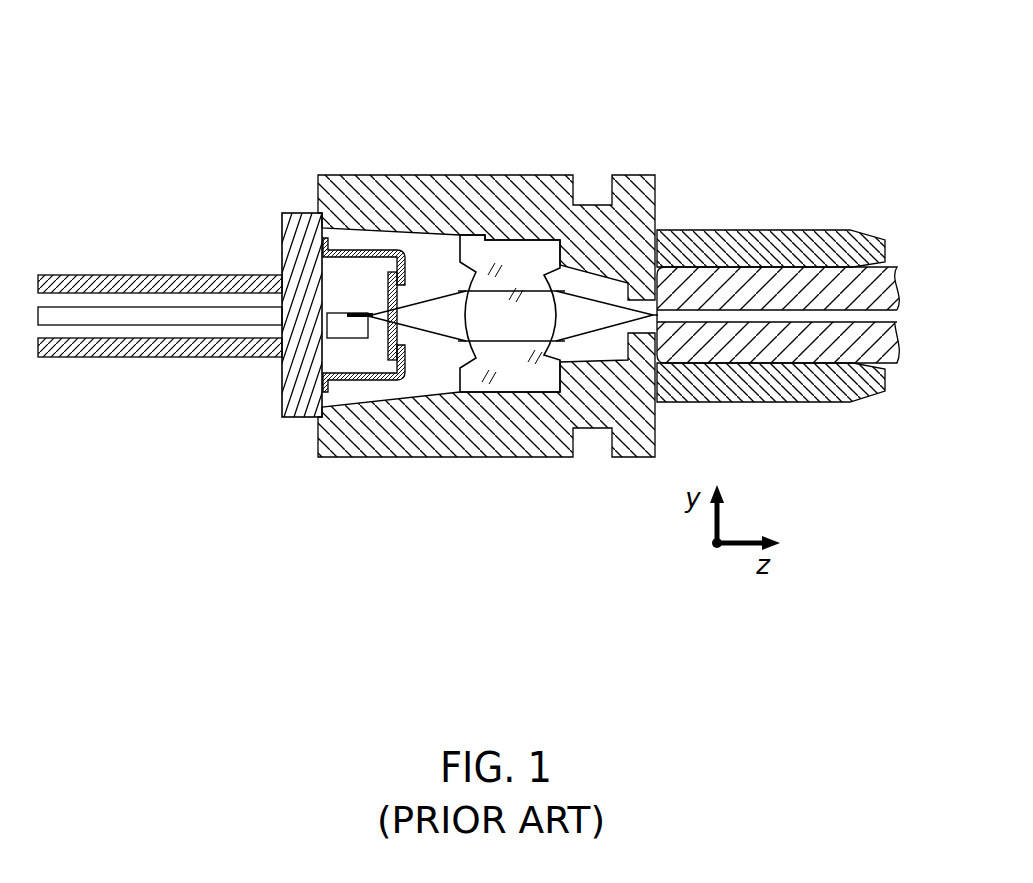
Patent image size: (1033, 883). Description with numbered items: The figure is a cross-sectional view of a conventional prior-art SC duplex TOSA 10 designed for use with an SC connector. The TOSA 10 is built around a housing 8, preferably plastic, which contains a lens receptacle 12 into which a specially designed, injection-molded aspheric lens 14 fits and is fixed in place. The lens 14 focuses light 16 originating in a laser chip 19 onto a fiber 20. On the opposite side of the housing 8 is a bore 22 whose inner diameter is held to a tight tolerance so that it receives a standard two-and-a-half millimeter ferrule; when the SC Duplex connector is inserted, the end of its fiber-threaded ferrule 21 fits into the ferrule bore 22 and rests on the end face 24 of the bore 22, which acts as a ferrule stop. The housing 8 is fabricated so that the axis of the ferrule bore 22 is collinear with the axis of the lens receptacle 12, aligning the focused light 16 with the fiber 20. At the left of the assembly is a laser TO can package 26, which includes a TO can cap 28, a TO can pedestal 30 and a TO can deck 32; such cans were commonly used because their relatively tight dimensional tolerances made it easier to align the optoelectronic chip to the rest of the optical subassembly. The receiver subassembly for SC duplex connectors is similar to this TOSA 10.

The housing 8 is at (513, 458).
The TOSA 10 is at (393, 97).
The lens receptacle 12 is at (512, 228).
The lens 14 is at (507, 377).
The light 16 is at (612, 283).
The laser chip 19 is at (360, 312).
The fiber 20 is at (775, 325).
The ferrule 21 is at (828, 348).
The bore 22 is at (775, 267).
The end face 24 is at (648, 365).
The laser TO can package 26 is at (277, 363).
The TO can cap 28 is at (370, 250).
The TO can pedestal 30 is at (335, 340).
The TO can deck 32 is at (295, 417).